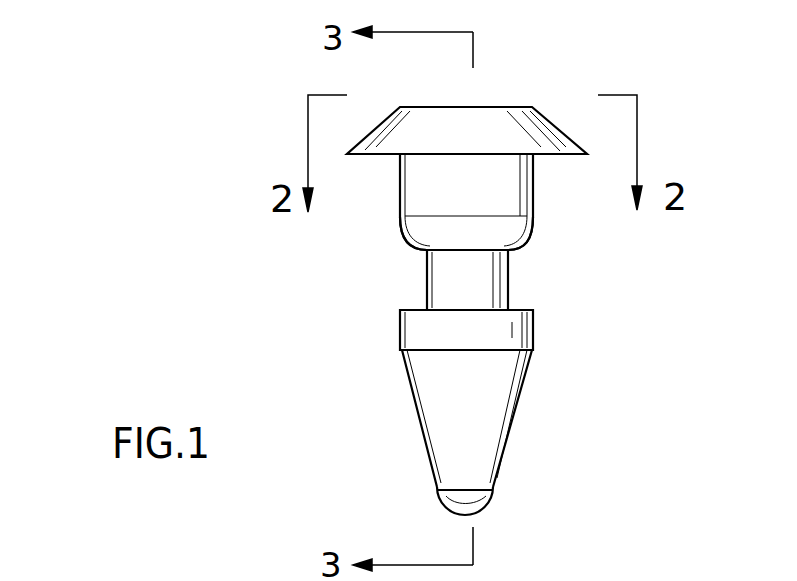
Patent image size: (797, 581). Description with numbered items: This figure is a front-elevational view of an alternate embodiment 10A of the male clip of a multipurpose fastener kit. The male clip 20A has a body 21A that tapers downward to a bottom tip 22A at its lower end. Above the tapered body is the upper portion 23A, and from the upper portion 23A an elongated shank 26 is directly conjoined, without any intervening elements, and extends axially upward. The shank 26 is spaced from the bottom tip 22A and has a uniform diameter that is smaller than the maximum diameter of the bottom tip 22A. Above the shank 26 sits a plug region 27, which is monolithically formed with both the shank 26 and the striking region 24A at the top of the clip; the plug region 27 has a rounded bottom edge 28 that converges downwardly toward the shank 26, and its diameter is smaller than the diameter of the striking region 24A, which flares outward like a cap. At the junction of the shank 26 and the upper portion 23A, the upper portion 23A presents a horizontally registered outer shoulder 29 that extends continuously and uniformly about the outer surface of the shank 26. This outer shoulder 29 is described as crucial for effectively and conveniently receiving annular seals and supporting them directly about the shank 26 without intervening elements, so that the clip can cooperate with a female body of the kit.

The alternate embodiment 10A is at (187, 223).
The striking region 24A is at (533, 107).
The plug region 27 is at (534, 192).
The rounded bottom edge 28 is at (416, 240).
The elongated shank 26 is at (426, 274).
The male clip 20A is at (527, 294).
The upper portion 23A is at (534, 329).
The outer shoulder 29 is at (407, 310).
The body 21A is at (532, 365).
The bottom tip 22A is at (492, 500).